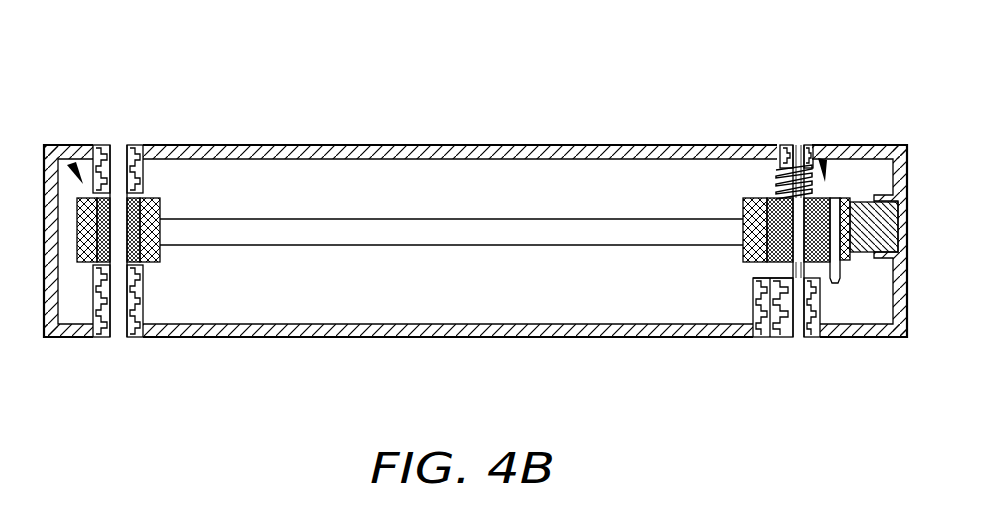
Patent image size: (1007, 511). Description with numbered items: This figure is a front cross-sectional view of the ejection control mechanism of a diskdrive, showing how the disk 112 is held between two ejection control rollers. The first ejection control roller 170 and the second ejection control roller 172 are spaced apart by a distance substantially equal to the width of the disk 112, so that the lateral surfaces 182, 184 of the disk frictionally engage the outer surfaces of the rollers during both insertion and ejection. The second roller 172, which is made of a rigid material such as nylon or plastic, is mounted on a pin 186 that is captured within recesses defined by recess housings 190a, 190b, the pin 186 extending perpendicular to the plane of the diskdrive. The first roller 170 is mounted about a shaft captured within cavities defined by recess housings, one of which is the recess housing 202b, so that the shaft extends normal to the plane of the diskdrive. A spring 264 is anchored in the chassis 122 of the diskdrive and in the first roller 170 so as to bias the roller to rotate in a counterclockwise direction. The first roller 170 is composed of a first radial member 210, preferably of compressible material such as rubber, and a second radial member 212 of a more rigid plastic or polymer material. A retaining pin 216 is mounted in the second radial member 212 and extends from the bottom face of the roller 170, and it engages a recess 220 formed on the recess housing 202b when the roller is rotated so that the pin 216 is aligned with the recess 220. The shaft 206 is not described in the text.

The disk 112 is at (430, 230).
The chassis 122 is at (650, 144).
The first ejection control roller 170 is at (822, 159).
The second ejection control roller 172 is at (71, 164).
The lateral surface 182 is at (743, 201).
The lateral surface 184 is at (158, 200).
The pin 186 is at (122, 258).
The recess housing 190a is at (125, 147).
The recess housing 190b is at (115, 337).
The recess housing 202b is at (774, 337).
The shaft 206 is at (795, 148).
The first radial member 210 is at (832, 198).
The second radial member 212 is at (745, 262).
The retaining pin 216 is at (836, 284).
The recess 220 is at (755, 308).
The spring 264 is at (778, 170).